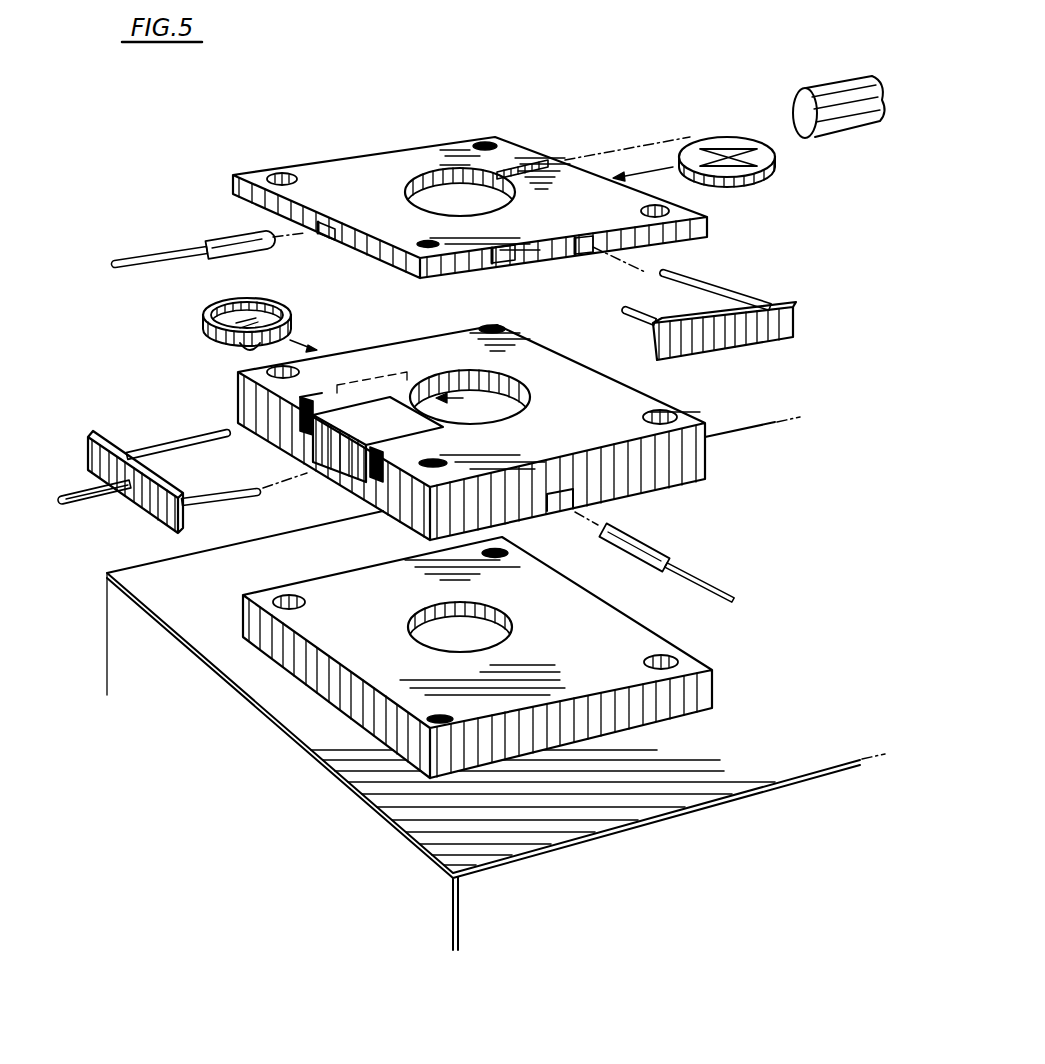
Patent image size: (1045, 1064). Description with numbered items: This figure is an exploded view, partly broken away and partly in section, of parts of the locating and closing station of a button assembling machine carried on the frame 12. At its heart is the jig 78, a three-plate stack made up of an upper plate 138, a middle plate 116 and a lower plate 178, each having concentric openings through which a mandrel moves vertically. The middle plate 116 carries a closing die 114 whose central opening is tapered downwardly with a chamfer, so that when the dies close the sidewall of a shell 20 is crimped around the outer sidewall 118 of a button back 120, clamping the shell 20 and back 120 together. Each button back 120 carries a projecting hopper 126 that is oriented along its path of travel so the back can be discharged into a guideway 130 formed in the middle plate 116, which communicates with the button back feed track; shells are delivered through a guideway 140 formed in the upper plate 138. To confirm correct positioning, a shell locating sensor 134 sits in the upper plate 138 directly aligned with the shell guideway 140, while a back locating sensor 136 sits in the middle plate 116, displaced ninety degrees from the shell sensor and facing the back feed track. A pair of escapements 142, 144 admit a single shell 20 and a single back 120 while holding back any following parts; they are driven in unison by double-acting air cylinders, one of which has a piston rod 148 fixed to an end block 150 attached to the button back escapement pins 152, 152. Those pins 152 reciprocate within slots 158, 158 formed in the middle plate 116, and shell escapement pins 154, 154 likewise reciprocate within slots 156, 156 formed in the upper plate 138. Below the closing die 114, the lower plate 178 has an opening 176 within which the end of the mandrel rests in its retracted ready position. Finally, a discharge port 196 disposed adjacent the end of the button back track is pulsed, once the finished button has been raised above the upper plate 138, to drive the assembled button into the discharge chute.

The frame 12 is at (552, 832).
The shell 20 is at (697, 131).
The jig 78 is at (190, 180).
The closing die 114 is at (527, 388).
The middle plate 116 is at (663, 403).
The outer sidewall 118 is at (220, 337).
The button back 120 is at (197, 315).
The hopper 126 is at (250, 348).
The guideway 130 is at (432, 393).
The shell locating sensor 134 is at (225, 237).
The back locating sensor 136 is at (643, 540).
The upper plate 138 is at (368, 167).
The guideway 140 is at (533, 187).
The escapement 142 is at (138, 517).
The escapement 144 is at (737, 284).
The piston rod 148 is at (75, 488).
The end block 150 is at (95, 455).
The button back escapement pins 152 is at (218, 488).
The shell escapement pins 154 is at (668, 300).
The slots 156 is at (498, 267).
The slots 158 is at (312, 470).
The opening 176 is at (495, 618).
The lower plate 178 is at (662, 647).
The discharge port 196 is at (837, 137).